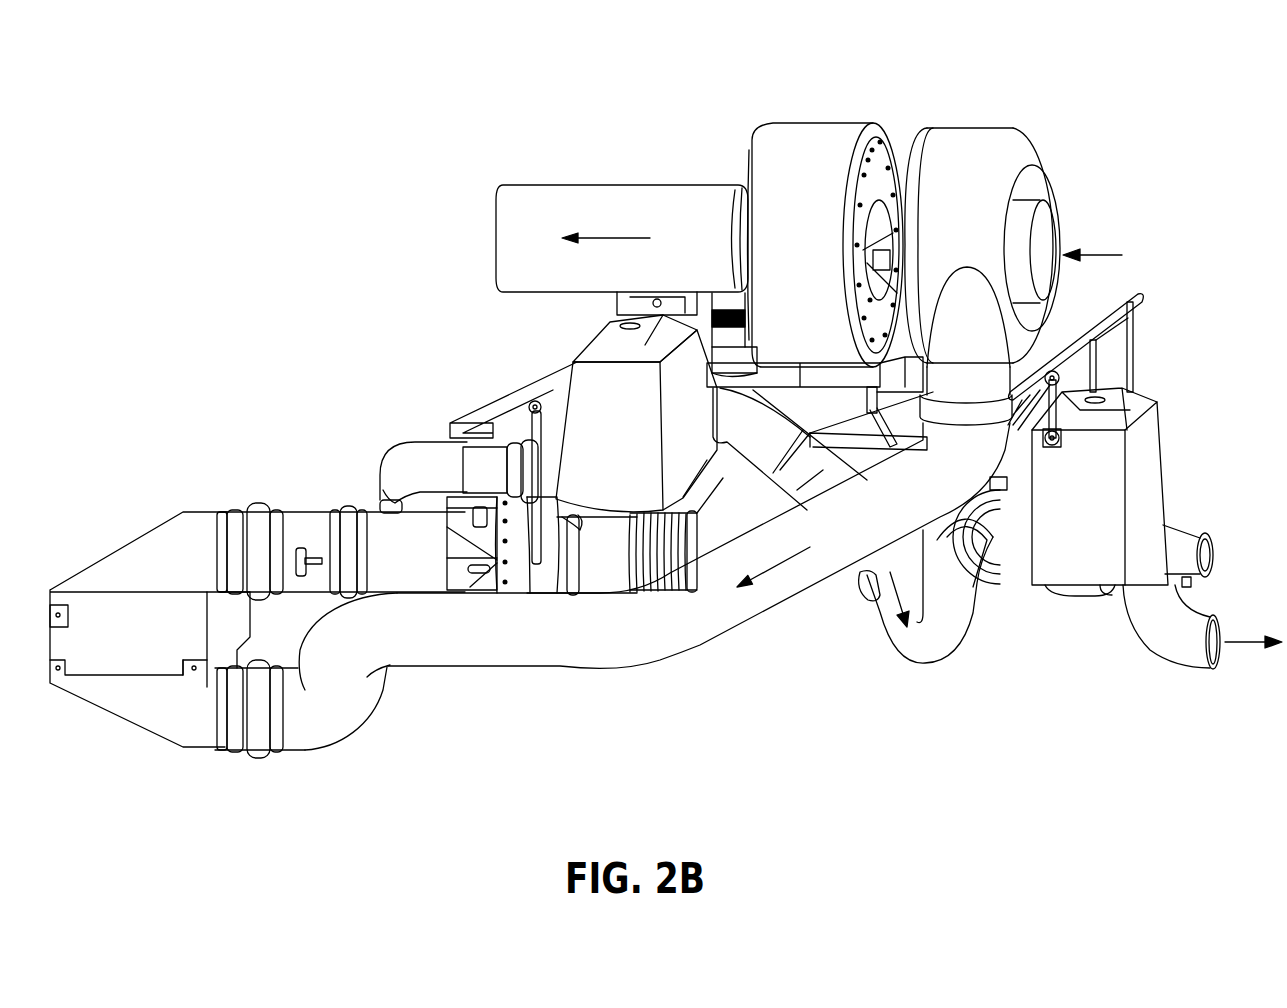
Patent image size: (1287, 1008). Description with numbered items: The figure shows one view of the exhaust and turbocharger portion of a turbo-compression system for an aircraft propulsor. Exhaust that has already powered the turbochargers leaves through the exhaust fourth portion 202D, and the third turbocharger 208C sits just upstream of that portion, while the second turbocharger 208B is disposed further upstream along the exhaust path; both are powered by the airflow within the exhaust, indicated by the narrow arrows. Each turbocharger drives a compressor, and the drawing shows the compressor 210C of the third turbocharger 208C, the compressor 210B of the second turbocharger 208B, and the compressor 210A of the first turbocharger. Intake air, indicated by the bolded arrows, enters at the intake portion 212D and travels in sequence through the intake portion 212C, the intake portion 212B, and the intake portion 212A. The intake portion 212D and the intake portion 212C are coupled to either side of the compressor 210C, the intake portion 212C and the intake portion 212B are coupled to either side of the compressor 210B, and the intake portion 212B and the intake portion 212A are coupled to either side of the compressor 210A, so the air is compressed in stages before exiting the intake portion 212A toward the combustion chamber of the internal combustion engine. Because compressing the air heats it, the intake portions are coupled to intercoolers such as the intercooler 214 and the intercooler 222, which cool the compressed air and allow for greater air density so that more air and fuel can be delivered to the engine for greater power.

The exhaust fourth portion 202D is at (637, 185).
The third turbocharger 208C is at (823, 123).
The compressor 210C is at (993, 128).
The intake portion 212D is at (1103, 255).
The intercooler 222 is at (597, 350).
The intercooler 214 is at (163, 512).
The compressor 210B is at (375, 493).
The second turbocharger 208B is at (528, 578).
The intake portion 212C is at (695, 648).
The intake portion 212B is at (933, 663).
The compressor 210A is at (1003, 583).
The intake portion 212A is at (1192, 668).